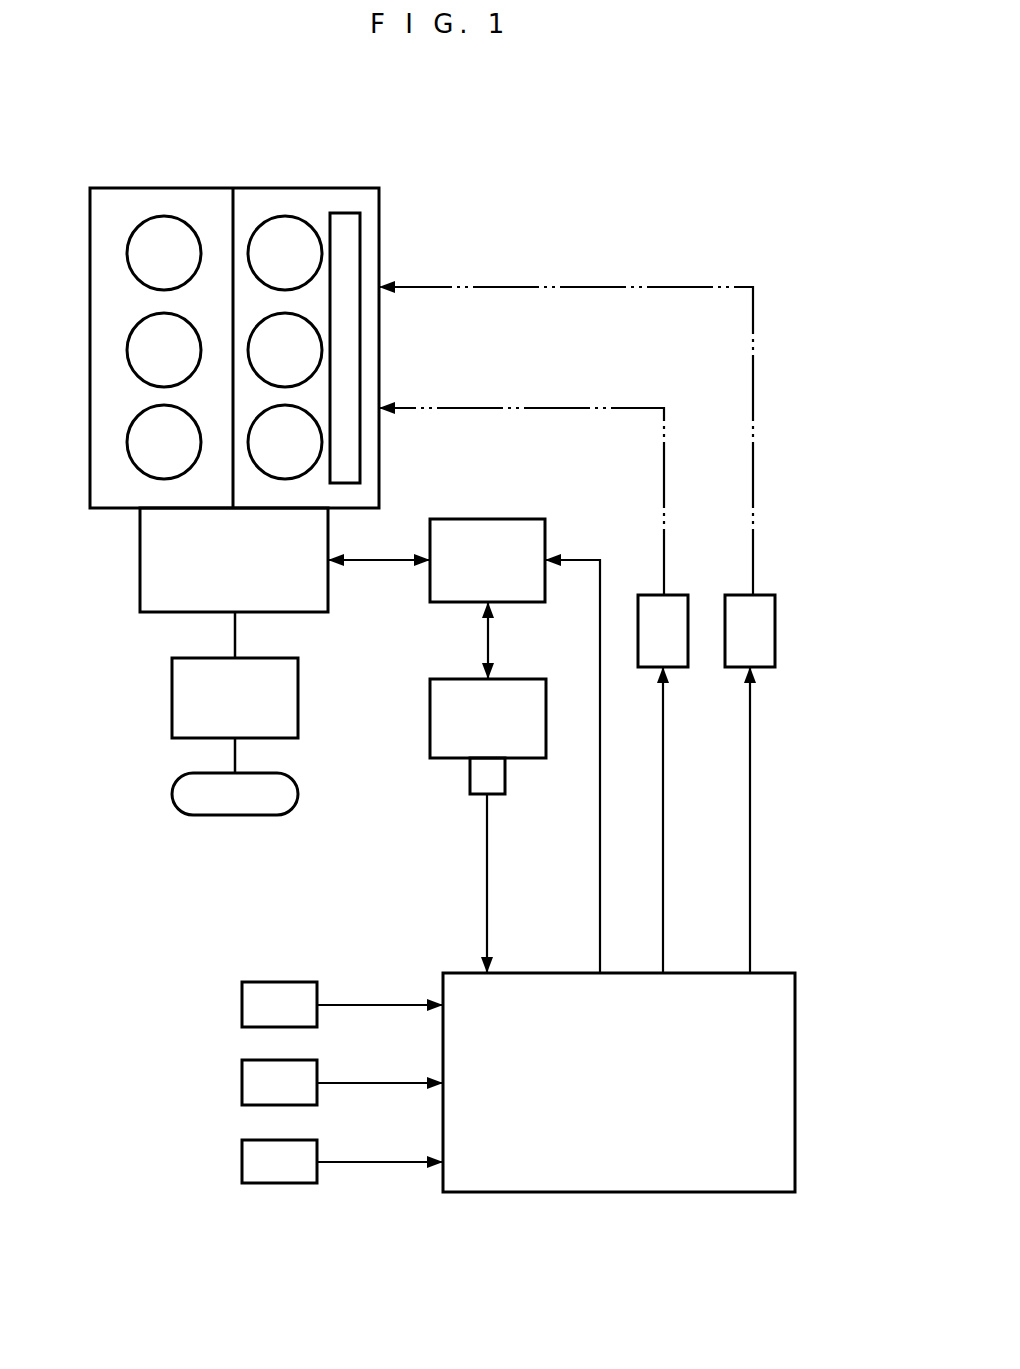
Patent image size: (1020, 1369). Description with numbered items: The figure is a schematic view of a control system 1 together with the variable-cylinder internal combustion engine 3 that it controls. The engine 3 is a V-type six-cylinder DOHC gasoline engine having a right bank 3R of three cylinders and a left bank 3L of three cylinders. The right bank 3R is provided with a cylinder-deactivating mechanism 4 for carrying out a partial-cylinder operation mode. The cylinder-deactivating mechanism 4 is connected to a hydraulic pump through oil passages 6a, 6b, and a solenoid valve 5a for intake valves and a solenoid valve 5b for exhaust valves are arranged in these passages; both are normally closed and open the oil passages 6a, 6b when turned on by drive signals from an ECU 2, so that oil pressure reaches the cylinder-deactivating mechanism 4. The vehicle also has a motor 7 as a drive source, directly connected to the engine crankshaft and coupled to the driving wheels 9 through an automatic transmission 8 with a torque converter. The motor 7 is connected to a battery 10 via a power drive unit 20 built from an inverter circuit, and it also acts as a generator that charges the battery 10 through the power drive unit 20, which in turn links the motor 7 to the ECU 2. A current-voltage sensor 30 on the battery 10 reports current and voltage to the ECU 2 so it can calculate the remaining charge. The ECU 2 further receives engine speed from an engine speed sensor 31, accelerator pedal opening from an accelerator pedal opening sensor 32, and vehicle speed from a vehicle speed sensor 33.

The control system 1 is at (594, 1297).
The ECU 2 is at (795, 1108).
The engine 3 is at (234, 321).
The left bank 3L is at (173, 188).
The right bank 3R is at (318, 160).
The cylinder-deactivating mechanism 4 is at (345, 247).
The solenoid valve for intake valves 5a is at (680, 595).
The solenoid valve for exhaust valves 5b is at (767, 595).
The oil passage 6a is at (542, 406).
The oil passage 6b is at (635, 286).
The motor 7 is at (140, 570).
The automatic transmission 8 is at (172, 697).
The driving wheels 9 is at (172, 790).
The battery 10 is at (430, 725).
The power drive unit 20 is at (512, 519).
The current-voltage sensor 30 is at (470, 778).
The engine speed sensor 31 is at (242, 998).
The accelerator pedal opening sensor 32 is at (242, 1080).
The vehicle speed sensor 33 is at (242, 1154).